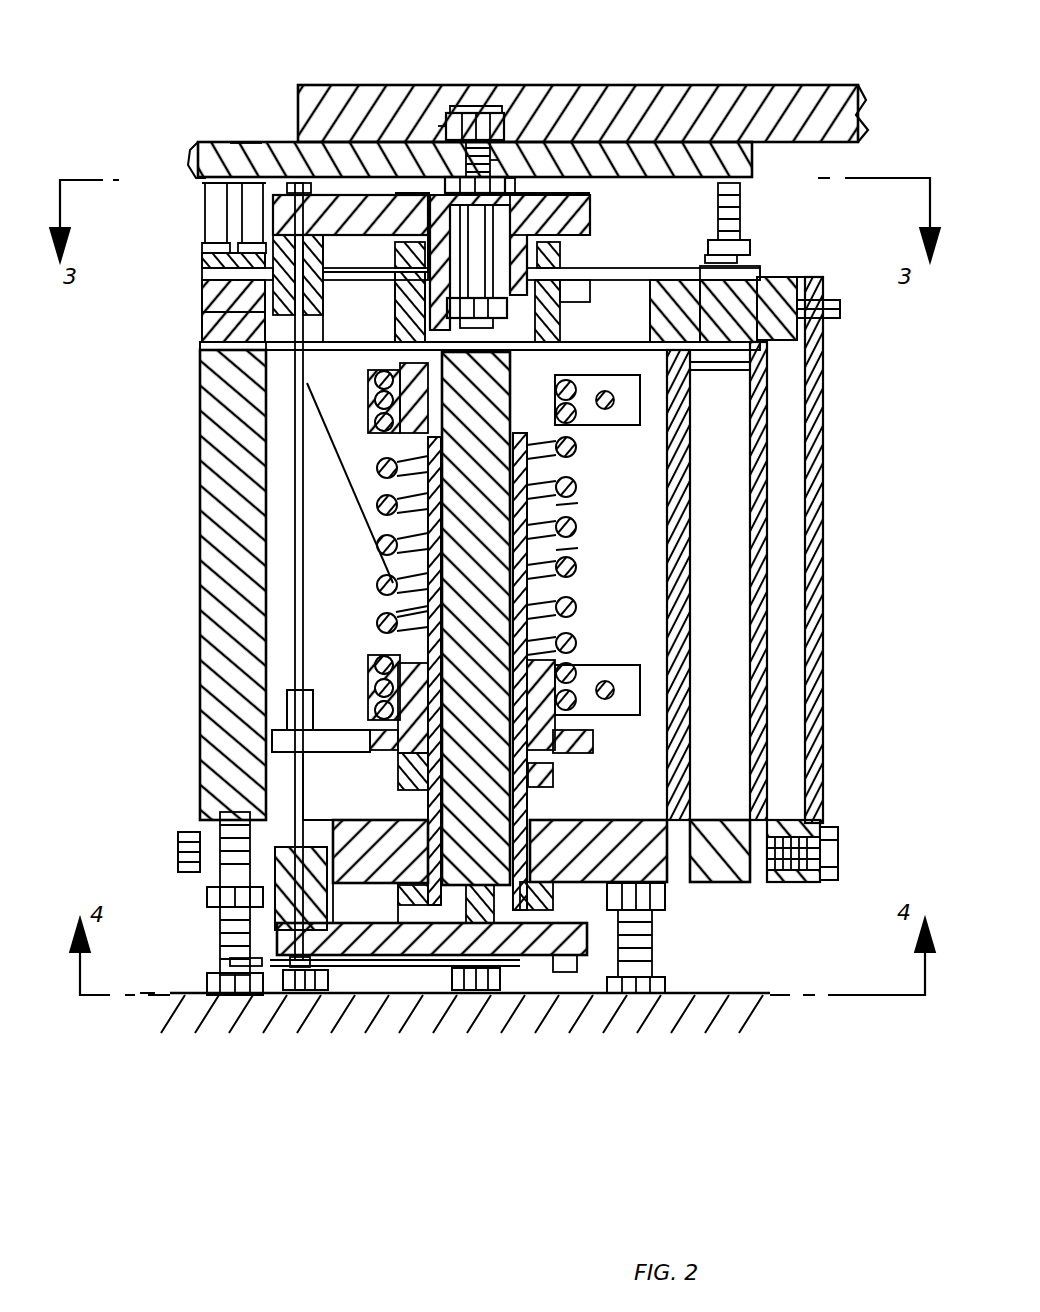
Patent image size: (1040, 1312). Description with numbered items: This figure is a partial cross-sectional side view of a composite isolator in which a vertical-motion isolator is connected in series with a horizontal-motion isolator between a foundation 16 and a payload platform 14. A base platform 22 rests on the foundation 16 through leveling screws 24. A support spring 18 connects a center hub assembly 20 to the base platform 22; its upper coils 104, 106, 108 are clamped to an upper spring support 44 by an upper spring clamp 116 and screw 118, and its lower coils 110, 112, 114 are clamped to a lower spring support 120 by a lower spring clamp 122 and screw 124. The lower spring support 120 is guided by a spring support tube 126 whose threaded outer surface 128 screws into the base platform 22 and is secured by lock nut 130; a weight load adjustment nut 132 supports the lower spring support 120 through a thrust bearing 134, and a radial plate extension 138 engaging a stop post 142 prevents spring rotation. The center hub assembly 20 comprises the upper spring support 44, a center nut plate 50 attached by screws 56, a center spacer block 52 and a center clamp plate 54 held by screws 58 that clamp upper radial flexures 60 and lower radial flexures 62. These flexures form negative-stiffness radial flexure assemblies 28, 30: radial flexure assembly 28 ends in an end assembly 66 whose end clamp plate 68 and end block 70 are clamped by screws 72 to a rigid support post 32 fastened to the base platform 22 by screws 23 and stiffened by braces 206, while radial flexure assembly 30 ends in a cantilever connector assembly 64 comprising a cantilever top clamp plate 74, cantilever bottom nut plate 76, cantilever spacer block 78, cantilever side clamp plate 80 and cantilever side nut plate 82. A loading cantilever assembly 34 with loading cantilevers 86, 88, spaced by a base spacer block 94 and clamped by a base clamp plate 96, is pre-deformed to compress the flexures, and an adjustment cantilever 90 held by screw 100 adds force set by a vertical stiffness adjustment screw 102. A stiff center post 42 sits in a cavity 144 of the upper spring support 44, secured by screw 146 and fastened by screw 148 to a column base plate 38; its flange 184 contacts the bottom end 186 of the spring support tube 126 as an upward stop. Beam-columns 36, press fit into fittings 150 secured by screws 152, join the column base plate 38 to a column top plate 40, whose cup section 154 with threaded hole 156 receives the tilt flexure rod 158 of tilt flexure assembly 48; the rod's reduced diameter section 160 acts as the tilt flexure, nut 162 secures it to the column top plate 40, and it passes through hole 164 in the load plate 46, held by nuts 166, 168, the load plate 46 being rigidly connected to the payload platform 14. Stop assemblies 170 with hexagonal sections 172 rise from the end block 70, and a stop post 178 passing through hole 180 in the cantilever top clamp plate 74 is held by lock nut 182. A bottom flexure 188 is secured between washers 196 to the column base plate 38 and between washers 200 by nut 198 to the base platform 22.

The payload platform 14 is at (785, 90).
The foundation 16 is at (745, 993).
The support spring 18 is at (577, 525).
The center hub assembly 20 is at (394, 312).
The base platform 22 is at (362, 824).
The screws 23 is at (190, 840).
The leveling screws 24 is at (220, 948).
The radial flexure assembly 28 is at (367, 236).
The radial flexure assembly 30 is at (650, 180).
The rigid support post 32 is at (200, 483).
The loading cantilever assembly 34 is at (852, 462).
The flexible beam-columns 36 is at (305, 576).
The column base plate 38 is at (545, 940).
The column top plate 40 is at (335, 192).
The stiff center post 42 is at (570, 583).
The upper spring support 44 is at (380, 452).
The load plate 46 is at (325, 200).
The tilt flexure assembly 48 is at (510, 105).
The center nut plate 50 is at (385, 360).
The center spacer block 52 is at (560, 318).
The center clamp plate 54 is at (580, 264).
The screws 56 is at (660, 290).
The screws 58 is at (420, 192).
The upper radial flexures 60 is at (562, 262).
The lower radial flexures 62 is at (692, 438).
The cantilever connector assembly 64 is at (810, 260).
The end assembly 66 is at (200, 321).
The end clamp plate 68 is at (202, 262).
The end block 70 is at (200, 335).
The screws 72 is at (245, 246).
The cantilever top clamp plate 74 is at (745, 268).
The cantilever bottom nut plate 76 is at (704, 380).
The cantilever spacer block 78 is at (716, 360).
The cantilever side clamp plate 80 is at (797, 280).
The cantilever side nut plate 82 is at (650, 297).
The loading cantilever 86 is at (700, 468).
The loading cantilever 88 is at (752, 584).
The adjustment cantilever 90 is at (823, 565).
The base spacer block 94 is at (735, 822).
The base clamp plate 96 is at (785, 882).
The screw 100 is at (838, 845).
The vertical stiffness adjustment screw 102 is at (840, 308).
The coil 104 is at (368, 428).
The coil 106 is at (368, 405).
The coil 108 is at (368, 385).
The coil 110 is at (376, 697).
The coil 112 is at (374, 676).
The coil 114 is at (376, 655).
The upper spring clamp 116 is at (625, 418).
The screw 118 is at (605, 412).
The lower spring support 120 is at (575, 670).
The lower spring clamp 122 is at (625, 688).
The screw 124 is at (607, 702).
The spring support tube 126 is at (396, 612).
The threaded outer surface 128 is at (436, 820).
The lock nut 130 is at (400, 893).
The weight load adjustment nut 132 is at (313, 787).
The thrust bearing 134 is at (398, 762).
The radial plate extension 138 is at (288, 740).
The stop post 142 is at (288, 712).
The cavity 144 is at (578, 504).
The screw 146 is at (578, 549).
The screw 148 is at (485, 905).
The fittings 150 is at (202, 290).
The screws 152 is at (262, 144).
The cup section 154 is at (405, 192).
The threaded hole 156 is at (448, 124).
The tilt flexure rod 158 is at (478, 106).
The reduced diameter section 160 is at (586, 197).
The nut 162 is at (450, 308).
The hole 164 is at (515, 170).
The nut 166 is at (560, 185).
The nut 168 is at (492, 150).
The stop assemblies 170 is at (192, 207).
The hexagonal section 172 is at (196, 165).
The stop post 178 is at (742, 214).
The hole 180 is at (700, 272).
The lock nut 182 is at (708, 250).
The flange 184 is at (420, 905).
The bottom end 186 is at (410, 925).
The bottom flexure 188 is at (345, 957).
The washers 196 is at (470, 960).
The nut 198 is at (300, 990).
The washers 200 is at (270, 975).
The braces 206 is at (352, 518).